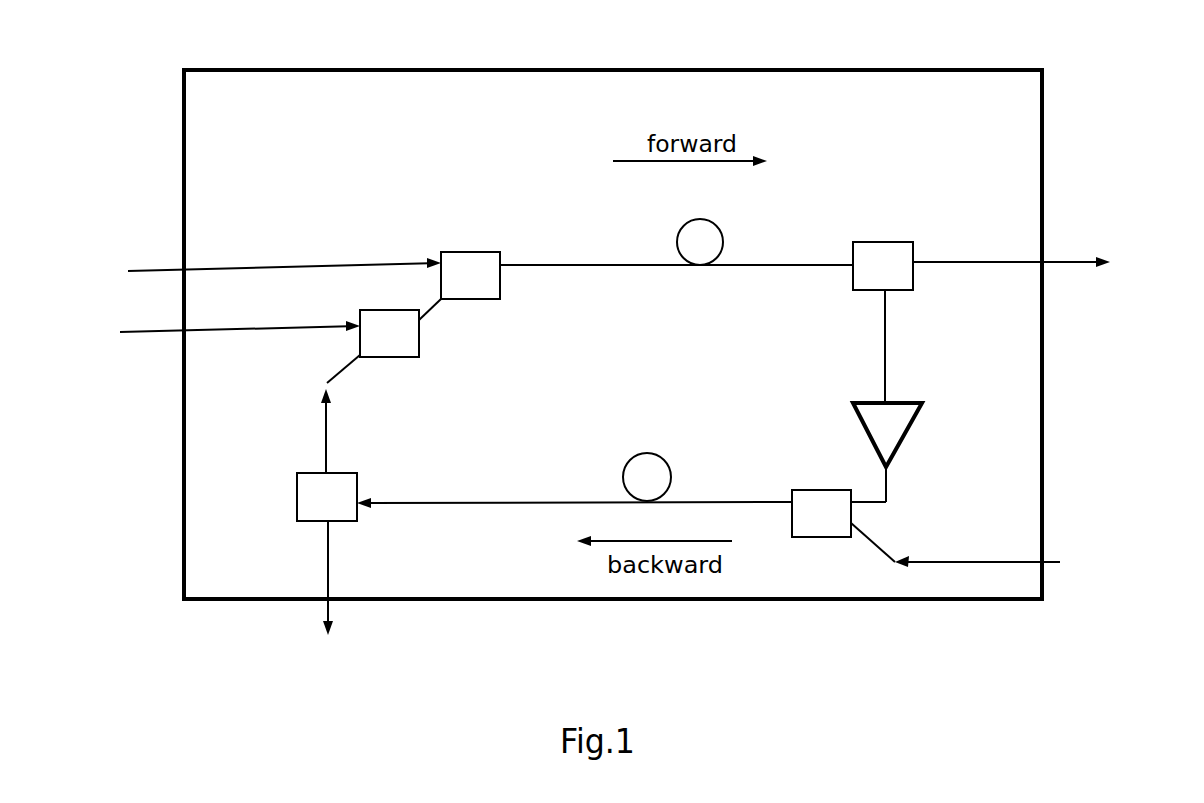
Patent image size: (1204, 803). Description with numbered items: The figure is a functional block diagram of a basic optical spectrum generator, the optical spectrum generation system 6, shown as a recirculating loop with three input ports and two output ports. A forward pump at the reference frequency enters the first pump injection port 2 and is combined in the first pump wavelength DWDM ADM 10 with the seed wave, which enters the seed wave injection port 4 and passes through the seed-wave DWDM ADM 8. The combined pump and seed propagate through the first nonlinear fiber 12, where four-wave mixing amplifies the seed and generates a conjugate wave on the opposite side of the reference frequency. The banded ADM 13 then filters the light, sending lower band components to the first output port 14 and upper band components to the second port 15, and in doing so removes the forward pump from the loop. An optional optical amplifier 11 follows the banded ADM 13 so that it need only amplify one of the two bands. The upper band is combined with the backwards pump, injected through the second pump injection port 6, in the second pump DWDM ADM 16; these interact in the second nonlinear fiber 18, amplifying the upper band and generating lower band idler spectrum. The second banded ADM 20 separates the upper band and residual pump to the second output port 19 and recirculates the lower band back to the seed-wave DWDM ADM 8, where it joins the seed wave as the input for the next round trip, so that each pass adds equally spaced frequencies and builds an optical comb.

The second pump injection port 6 is at (630, 315).
The first pump injection port 2 is at (239, 248).
The seed wave injection port 4 is at (198, 312).
The seed-wave DWDM ADM 8 is at (400, 315).
The first pump wavelength DWDM ADM 10 is at (647, 258).
The first nonlinear fiber 12 is at (700, 223).
The banded ADM 13 is at (883, 247).
The first output port 14 is at (1045, 254).
The second port 15 is at (952, 346).
The optical amplifier 11 is at (909, 452).
The second pump DWDM ADM 16 is at (760, 516).
The second nonlinear fiber 18 is at (647, 458).
The second banded ADM 20 is at (307, 438).
The second output port 19 is at (339, 595).